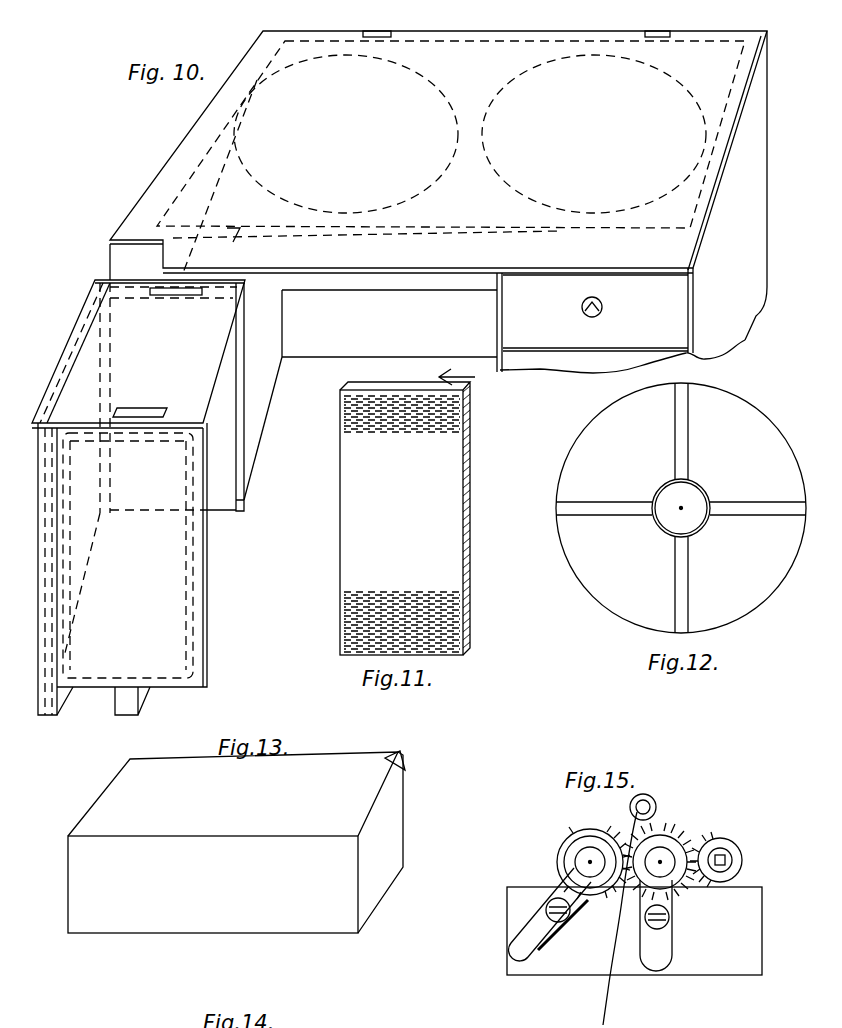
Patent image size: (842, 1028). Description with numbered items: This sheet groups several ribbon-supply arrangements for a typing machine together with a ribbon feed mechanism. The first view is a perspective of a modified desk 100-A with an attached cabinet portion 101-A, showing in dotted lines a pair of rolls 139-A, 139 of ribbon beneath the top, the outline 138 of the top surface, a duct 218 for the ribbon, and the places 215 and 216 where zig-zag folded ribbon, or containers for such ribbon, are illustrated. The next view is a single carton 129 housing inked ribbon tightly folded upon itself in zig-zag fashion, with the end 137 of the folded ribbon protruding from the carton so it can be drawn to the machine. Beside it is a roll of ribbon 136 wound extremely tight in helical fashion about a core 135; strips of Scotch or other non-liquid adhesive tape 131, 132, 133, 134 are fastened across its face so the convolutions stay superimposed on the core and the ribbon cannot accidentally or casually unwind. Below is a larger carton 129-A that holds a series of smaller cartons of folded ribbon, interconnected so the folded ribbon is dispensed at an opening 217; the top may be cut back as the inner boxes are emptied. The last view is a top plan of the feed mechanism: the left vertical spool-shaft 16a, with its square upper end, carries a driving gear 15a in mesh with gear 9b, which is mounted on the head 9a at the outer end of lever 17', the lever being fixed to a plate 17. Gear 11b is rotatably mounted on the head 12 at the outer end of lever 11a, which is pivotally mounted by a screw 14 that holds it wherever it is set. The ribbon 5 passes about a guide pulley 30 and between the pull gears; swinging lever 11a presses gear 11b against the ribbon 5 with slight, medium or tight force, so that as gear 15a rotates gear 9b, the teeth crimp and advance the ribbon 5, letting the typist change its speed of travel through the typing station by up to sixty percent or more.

In FIG. 10, the desk 100-A is at (158, 172).
In FIG. 10, the conduit 218 is at (182, 200).
In FIG. 10, the burner 139-A is at (346, 134).
In FIG. 10, the burner 139 is at (594, 134).
In FIG. 10, the top panel outline 138 is at (648, 218).
In FIG. 10, the zig-zag folded ribbon container 215 is at (205, 300).
In FIG. 10, the cabinet 101-A is at (78, 356).
In FIG. 10, the end of zig-zag folded ribbon 137 is at (474, 376).
In FIG. 10, the zig-zag folded ribbon container 216 is at (192, 567).
In FIG. 11, the carton 129 is at (340, 570).
In FIG. 12, the adhesive tape strip 131 is at (606, 521).
In FIG. 12, the adhesive tape strip 132 is at (672, 438).
In FIG. 12, the adhesive tape strip 133 is at (740, 502).
In FIG. 12, the adhesive tape strip 134 is at (697, 580).
In FIG. 12, the core 135 is at (697, 488).
In FIG. 12, the roll of ribbon 136 is at (612, 618).
In FIG. 13, the carton 129-A is at (235, 842).
In FIG. 13, the opening 217 is at (403, 752).
In FIG. 15, the inked ribbon 5 is at (648, 800).
In FIG. 15, the guide pulley 30 is at (645, 793).
In FIG. 15, the head 12 is at (560, 848).
In FIG. 15, the gear 11b is at (612, 836).
In FIG. 15, the gear 9b is at (683, 835).
In FIG. 15, the head 9a is at (688, 893).
In FIG. 15, the gear 15a is at (725, 838).
In FIG. 15, the spool-shaft 16a is at (732, 860).
In FIG. 15, the lever 11a is at (540, 940).
In FIG. 15, the lever 17' is at (677, 925).
In FIG. 15, the bracket plate 17 is at (634, 947).
In FIG. 15, the screw 14 is at (566, 916).